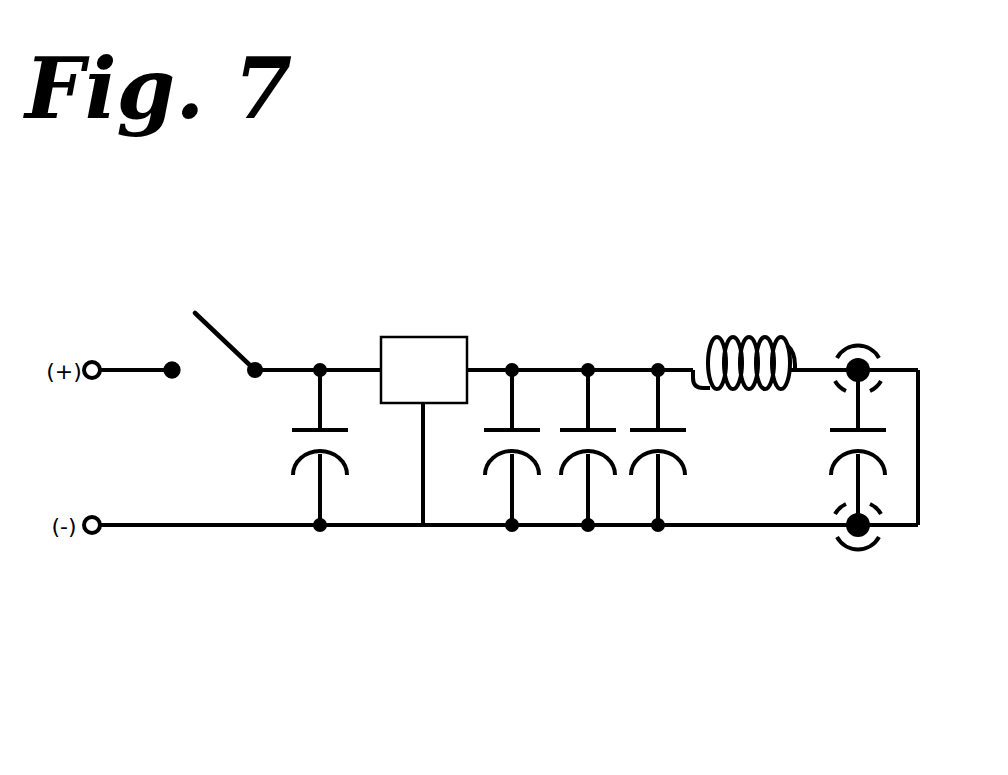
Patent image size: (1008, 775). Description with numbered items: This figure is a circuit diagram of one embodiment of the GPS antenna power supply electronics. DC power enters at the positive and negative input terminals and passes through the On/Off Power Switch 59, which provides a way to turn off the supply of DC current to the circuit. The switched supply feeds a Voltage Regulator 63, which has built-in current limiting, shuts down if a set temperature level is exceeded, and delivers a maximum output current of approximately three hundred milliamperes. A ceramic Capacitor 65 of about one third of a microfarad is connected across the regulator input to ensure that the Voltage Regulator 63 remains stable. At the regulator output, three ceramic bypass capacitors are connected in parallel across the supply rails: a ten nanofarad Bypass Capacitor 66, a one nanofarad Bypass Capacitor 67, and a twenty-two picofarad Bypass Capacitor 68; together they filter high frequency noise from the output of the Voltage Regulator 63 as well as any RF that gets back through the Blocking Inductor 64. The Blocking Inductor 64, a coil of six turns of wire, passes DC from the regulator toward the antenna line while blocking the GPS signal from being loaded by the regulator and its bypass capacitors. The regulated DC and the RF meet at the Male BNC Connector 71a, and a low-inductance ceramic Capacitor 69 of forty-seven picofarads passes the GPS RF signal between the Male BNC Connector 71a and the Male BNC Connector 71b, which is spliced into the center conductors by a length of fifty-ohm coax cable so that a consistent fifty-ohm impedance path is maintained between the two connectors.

The On/Off Power Switch 59 is at (222, 330).
The Voltage Regulator 63 is at (423, 337).
The Blocking Inductor 64 is at (723, 337).
The Capacitor (0.33 uF) 65 is at (295, 442).
The Bypass Capacitor (10 nF) 66 is at (491, 443).
The Bypass Capacitor (1000 pF) 67 is at (572, 443).
The Bypass Capacitor (22 pF) 68 is at (653, 443).
The Capacitor (47 pF) 69 is at (843, 442).
The Male BNC Connector 71a is at (855, 343).
The Male BNC Connector 71b is at (855, 550).